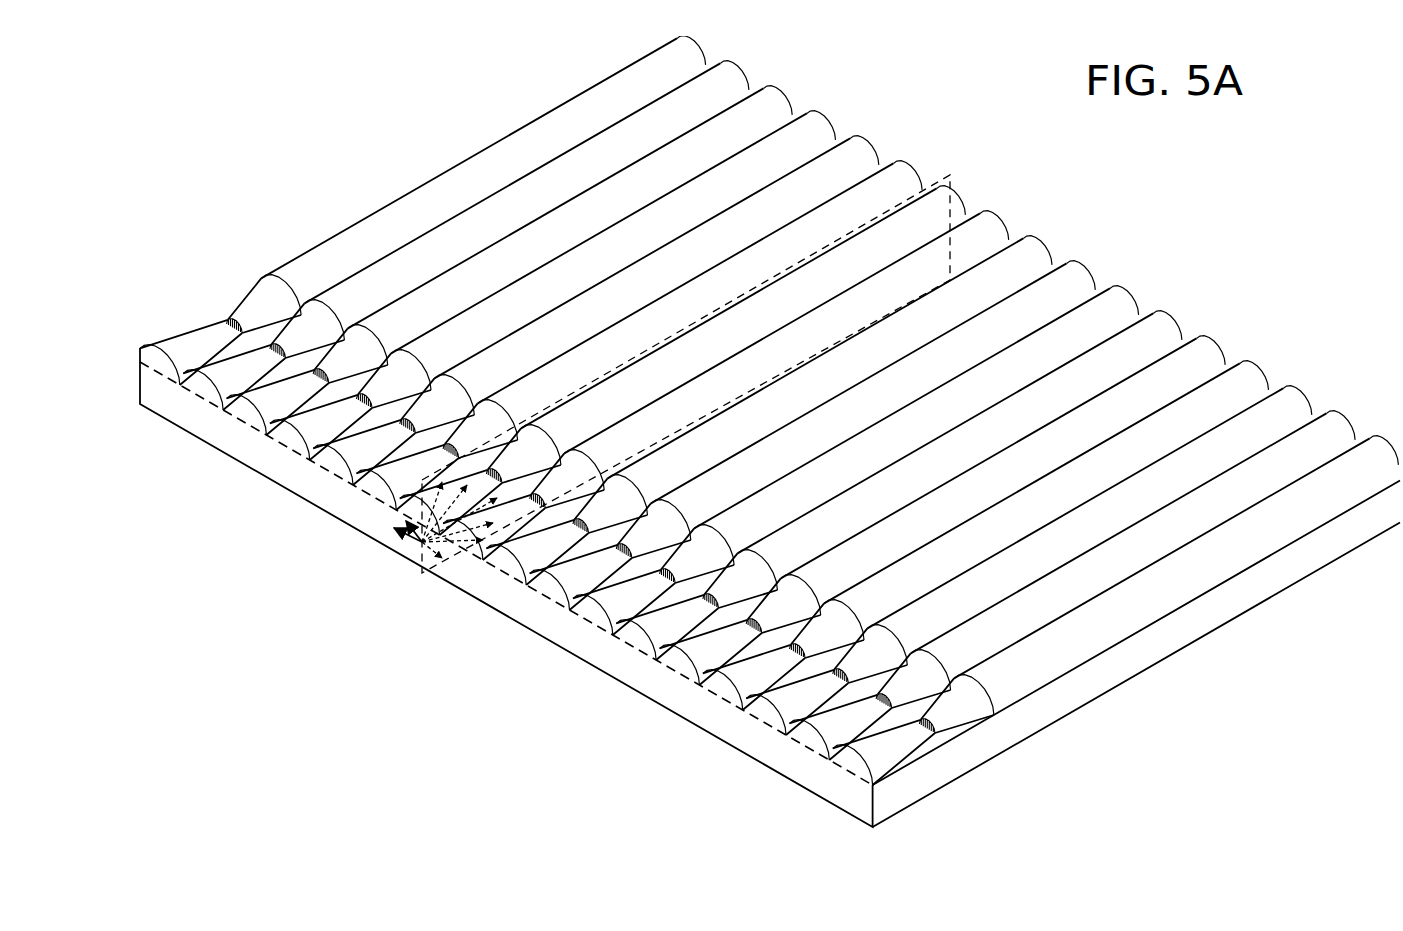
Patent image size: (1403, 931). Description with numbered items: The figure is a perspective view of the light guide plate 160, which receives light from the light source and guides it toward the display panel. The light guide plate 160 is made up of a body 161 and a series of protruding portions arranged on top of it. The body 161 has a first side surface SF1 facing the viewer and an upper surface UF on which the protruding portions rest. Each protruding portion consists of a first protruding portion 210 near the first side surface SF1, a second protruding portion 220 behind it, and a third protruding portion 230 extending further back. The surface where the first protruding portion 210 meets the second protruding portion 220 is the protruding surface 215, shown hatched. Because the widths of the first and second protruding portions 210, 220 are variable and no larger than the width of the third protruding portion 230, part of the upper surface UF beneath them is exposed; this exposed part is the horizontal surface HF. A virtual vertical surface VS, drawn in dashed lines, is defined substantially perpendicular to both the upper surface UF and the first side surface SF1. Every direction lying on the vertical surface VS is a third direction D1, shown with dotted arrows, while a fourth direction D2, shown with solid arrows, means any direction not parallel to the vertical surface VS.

The light guide plate 160 is at (1257, 226).
The body 161 is at (186, 410).
The horizontal surface HF is at (256, 343).
The upper surface UF is at (255, 430).
The first side surface SF1 is at (557, 625).
The vertical surface VS is at (460, 583).
The third direction D1 is at (427, 567).
The fourth direction D2 is at (403, 550).
The first protruding portion 210 is at (674, 662).
The protruding surface 215 is at (925, 745).
The second protruding portion 220 is at (973, 708).
The third protruding portion 230 is at (1072, 650).